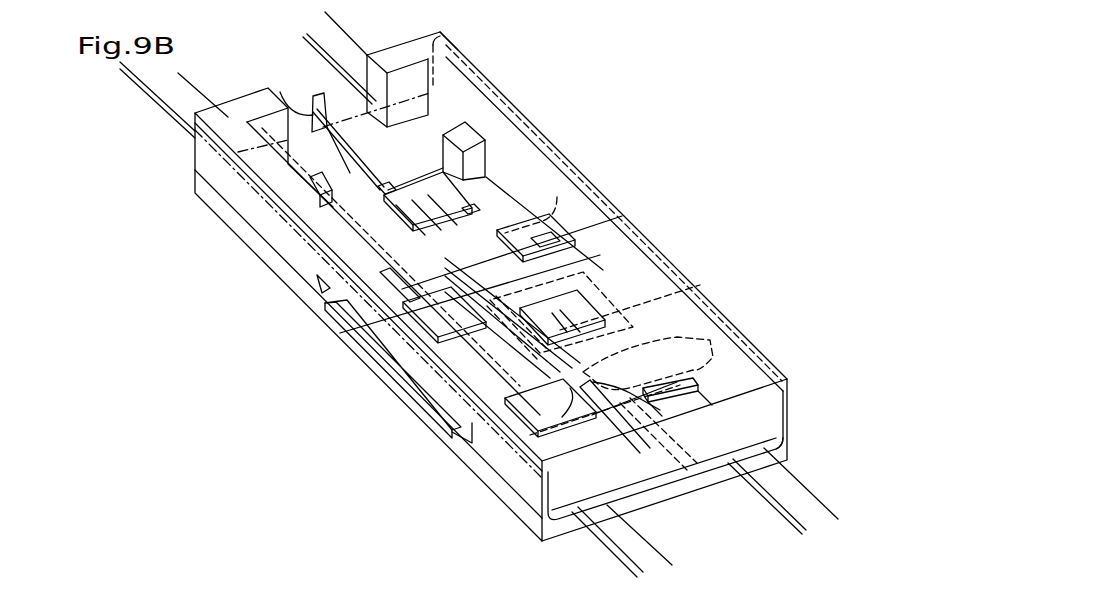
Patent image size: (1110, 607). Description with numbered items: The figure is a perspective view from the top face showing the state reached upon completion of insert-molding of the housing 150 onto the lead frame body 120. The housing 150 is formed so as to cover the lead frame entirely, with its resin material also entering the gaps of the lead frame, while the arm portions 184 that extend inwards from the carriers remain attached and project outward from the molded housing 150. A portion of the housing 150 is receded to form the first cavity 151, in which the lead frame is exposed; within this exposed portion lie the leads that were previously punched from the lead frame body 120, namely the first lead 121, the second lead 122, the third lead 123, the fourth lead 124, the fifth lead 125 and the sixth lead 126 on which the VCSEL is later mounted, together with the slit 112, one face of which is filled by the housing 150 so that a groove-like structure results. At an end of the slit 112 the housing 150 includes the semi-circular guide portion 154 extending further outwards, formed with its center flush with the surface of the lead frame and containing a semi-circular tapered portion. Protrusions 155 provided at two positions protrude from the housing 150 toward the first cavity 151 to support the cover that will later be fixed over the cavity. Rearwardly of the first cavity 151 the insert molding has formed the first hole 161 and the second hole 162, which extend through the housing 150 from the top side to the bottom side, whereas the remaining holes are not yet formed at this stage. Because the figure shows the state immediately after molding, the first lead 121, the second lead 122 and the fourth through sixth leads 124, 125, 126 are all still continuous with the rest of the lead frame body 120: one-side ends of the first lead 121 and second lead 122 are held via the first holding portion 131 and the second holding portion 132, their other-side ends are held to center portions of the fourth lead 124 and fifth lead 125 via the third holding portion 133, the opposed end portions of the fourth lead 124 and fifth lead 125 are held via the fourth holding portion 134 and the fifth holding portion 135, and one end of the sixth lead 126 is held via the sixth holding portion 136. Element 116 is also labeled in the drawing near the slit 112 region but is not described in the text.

The slit 112 is at (355, 160).
The bonding pad 116 is at (378, 187).
The lead frame body 120 is at (605, 200).
The first lead 121 is at (650, 323).
The second lead 122 is at (470, 378).
The third lead 123 is at (540, 440).
The fourth lead 124 is at (665, 443).
The fifth lead 125 is at (617, 452).
The sixth lead 126 is at (428, 213).
The first holding portion 131 is at (507, 230).
The second holding portion 132 is at (377, 270).
The third holding portion 133 is at (700, 325).
The fourth holding portion 134 is at (350, 338).
The fifth holding portion 135 is at (787, 438).
The sixth holding portion 136 is at (477, 207).
The housing 150 is at (195, 183).
The first cavity 151 is at (448, 108).
The guide portion 154 is at (320, 100).
The protrusions 155 is at (470, 140).
The first hole 161 is at (563, 315).
The second hole 162 is at (697, 383).
The arm portions 184 is at (167, 88).